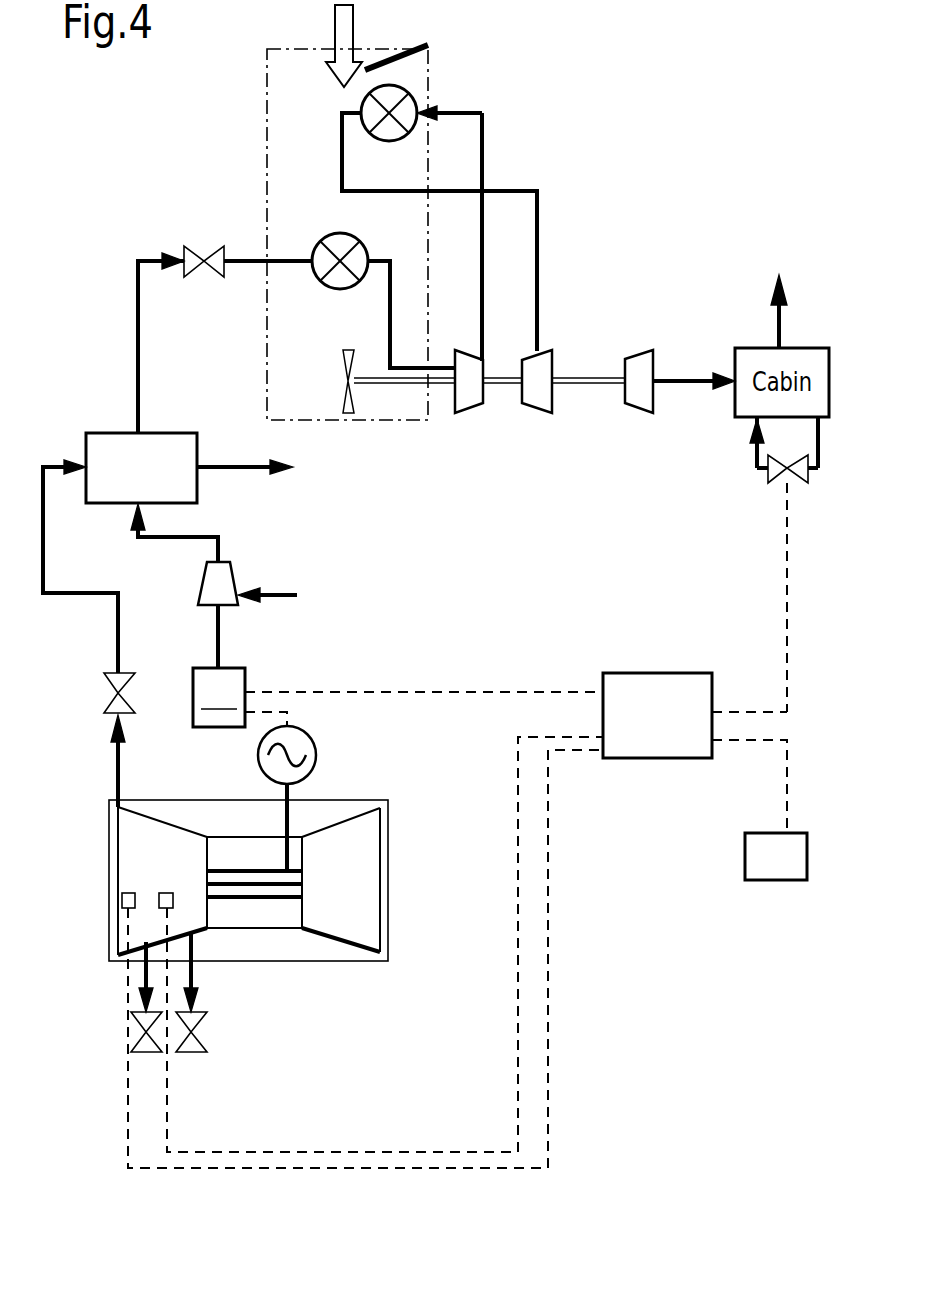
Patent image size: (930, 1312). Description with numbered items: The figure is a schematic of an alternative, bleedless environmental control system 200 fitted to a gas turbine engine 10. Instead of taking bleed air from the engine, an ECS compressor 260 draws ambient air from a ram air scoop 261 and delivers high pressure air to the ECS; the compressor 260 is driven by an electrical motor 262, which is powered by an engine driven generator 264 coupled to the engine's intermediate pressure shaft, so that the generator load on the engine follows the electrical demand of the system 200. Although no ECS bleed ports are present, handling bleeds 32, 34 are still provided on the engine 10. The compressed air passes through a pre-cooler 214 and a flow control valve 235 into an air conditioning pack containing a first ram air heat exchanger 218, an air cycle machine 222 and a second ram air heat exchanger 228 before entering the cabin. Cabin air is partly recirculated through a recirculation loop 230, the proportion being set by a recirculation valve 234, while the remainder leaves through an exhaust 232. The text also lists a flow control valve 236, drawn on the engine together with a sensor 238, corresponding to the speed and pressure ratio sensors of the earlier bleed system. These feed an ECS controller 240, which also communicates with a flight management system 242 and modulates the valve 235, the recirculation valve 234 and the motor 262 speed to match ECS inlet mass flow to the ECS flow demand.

The gas turbine engine 10 is at (311, 988).
The handling bleed 32 is at (150, 1048).
The handling bleed 34 is at (195, 1047).
The ECS system 200 is at (496, 1180).
The pre-cooler 214 is at (112, 428).
The first ram air heat exchanger 218 is at (265, 58).
The air cycle machine 222 is at (500, 416).
The second ram air heat exchanger 228 is at (430, 97).
The cabin recirculation line 230 is at (755, 453).
The cabin outflow 232 is at (783, 317).
The recirculation valve 234 is at (773, 473).
The flow control valve 235 is at (215, 252).
The flow control valve 236 is at (126, 892).
The second sensor 238 is at (167, 892).
The ECS controller 240 is at (640, 673).
The flight management system 242 is at (763, 833).
The ECS compressor 260 is at (215, 583).
The ram air scoop 261 is at (277, 592).
The electrical motor 262 is at (398, 697).
The engine driven generator 264 is at (300, 745).